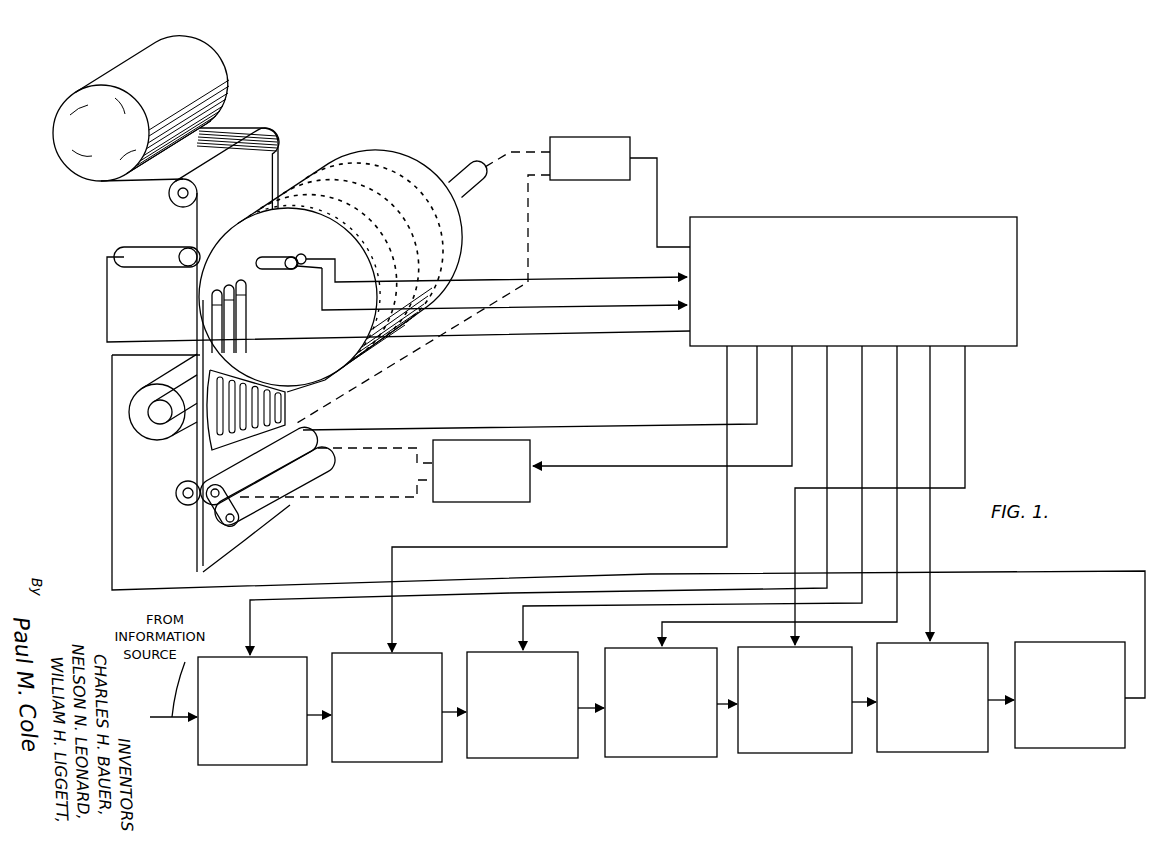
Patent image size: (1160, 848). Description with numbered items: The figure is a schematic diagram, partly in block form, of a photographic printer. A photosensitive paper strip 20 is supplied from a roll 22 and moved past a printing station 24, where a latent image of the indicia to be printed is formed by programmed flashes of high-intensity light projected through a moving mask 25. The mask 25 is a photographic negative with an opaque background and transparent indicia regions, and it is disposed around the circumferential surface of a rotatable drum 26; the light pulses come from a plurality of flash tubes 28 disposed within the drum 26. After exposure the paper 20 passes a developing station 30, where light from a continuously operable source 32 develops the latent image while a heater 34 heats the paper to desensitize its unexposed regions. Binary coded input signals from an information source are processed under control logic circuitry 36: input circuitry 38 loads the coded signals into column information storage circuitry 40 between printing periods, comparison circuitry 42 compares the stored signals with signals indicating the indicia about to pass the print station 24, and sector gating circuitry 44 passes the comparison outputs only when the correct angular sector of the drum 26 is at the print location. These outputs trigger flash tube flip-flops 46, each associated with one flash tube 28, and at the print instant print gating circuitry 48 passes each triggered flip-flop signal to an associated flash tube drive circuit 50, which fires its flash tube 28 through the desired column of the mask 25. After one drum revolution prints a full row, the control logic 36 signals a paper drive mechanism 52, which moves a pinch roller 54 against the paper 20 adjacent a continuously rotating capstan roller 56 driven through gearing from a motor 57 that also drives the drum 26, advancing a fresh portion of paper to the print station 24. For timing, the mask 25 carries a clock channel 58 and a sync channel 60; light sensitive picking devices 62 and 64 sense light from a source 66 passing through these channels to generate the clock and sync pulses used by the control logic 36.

The paper strip 20 is at (165, 173).
The roll 22 is at (92, 152).
The printing station 24 is at (190, 318).
The mask 25 is at (353, 173).
The rotatable drum 26 is at (470, 222).
The flash tubes 28 is at (250, 303).
The developing station 30 is at (188, 430).
The continuously operable source 32 is at (150, 416).
The heater 34 is at (284, 399).
The control logic circuitry 36 is at (738, 314).
The input circuitry 38 is at (292, 686).
The column information storage circuitry 40 is at (418, 668).
The comparison circuitry 42 is at (548, 668).
The sector gating circuitry 44 is at (695, 672).
The flash tube flip-flops 46 is at (835, 665).
The print gating circuitry 48 is at (968, 658).
The flash tube drive circuit 50 is at (1102, 652).
The paper drive mechanism 52 is at (518, 480).
The pinch roller 54 is at (205, 514).
The capstan roller 56 is at (176, 498).
The motor 57 is at (585, 170).
The clock channel 58 is at (378, 168).
The sync channel 60 is at (403, 168).
The light sensitive picking device 62 is at (283, 256).
The light sensitive picking device 64 is at (303, 254).
The source 66 is at (184, 268).